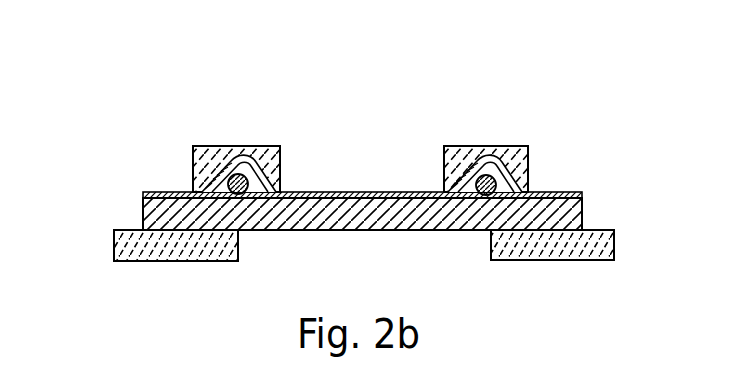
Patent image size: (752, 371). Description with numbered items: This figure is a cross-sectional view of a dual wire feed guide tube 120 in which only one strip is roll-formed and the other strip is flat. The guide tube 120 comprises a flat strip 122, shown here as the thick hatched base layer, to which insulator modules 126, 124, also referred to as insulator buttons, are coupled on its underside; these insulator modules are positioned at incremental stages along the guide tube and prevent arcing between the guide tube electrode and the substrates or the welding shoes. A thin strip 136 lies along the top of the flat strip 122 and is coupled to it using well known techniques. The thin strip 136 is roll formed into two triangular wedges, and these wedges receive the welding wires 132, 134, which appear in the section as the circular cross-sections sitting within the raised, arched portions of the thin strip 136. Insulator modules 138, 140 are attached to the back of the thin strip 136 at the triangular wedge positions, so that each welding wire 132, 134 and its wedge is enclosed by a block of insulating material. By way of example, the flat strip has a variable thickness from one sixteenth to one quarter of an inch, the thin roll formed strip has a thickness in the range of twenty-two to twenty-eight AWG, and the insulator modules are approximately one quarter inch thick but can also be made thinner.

The guide tube 120 is at (476, 71).
The flat strip 122 is at (300, 231).
The insulator module 124 is at (578, 260).
The insulator module 126 is at (130, 262).
The welding wire 132 is at (528, 170).
The welding wire 134 is at (228, 180).
The thin strip 136 is at (303, 192).
The insulator module 138 is at (503, 145).
The insulator module 140 is at (205, 148).